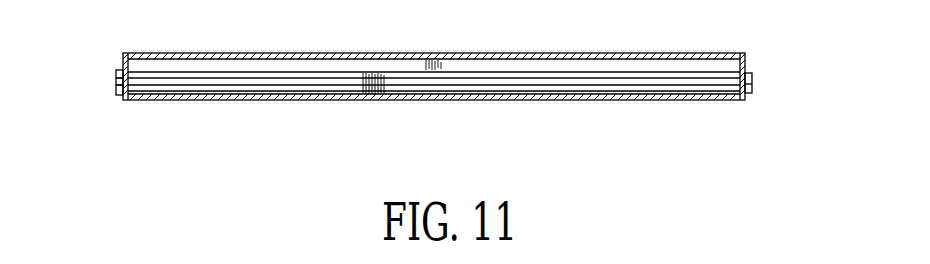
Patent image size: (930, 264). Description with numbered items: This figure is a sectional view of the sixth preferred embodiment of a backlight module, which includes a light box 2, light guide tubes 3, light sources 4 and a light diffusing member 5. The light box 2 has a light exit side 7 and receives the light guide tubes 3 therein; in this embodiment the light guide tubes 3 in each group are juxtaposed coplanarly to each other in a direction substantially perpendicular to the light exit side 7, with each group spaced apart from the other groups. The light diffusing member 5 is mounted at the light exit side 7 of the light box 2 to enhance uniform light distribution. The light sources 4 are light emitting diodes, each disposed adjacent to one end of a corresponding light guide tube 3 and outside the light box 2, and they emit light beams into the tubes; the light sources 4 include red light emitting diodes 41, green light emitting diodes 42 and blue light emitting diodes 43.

The light box 2 is at (748, 66).
The light guide tubes 3 is at (708, 86).
The light sources 4 is at (757, 93).
The light diffusing member 5 is at (745, 54).
The light exit side 7 is at (207, 53).
The red light emitting diodes 41 is at (116, 75).
The green light emitting diodes 42 is at (116, 82).
The blue light emitting diodes 43 is at (116, 90).